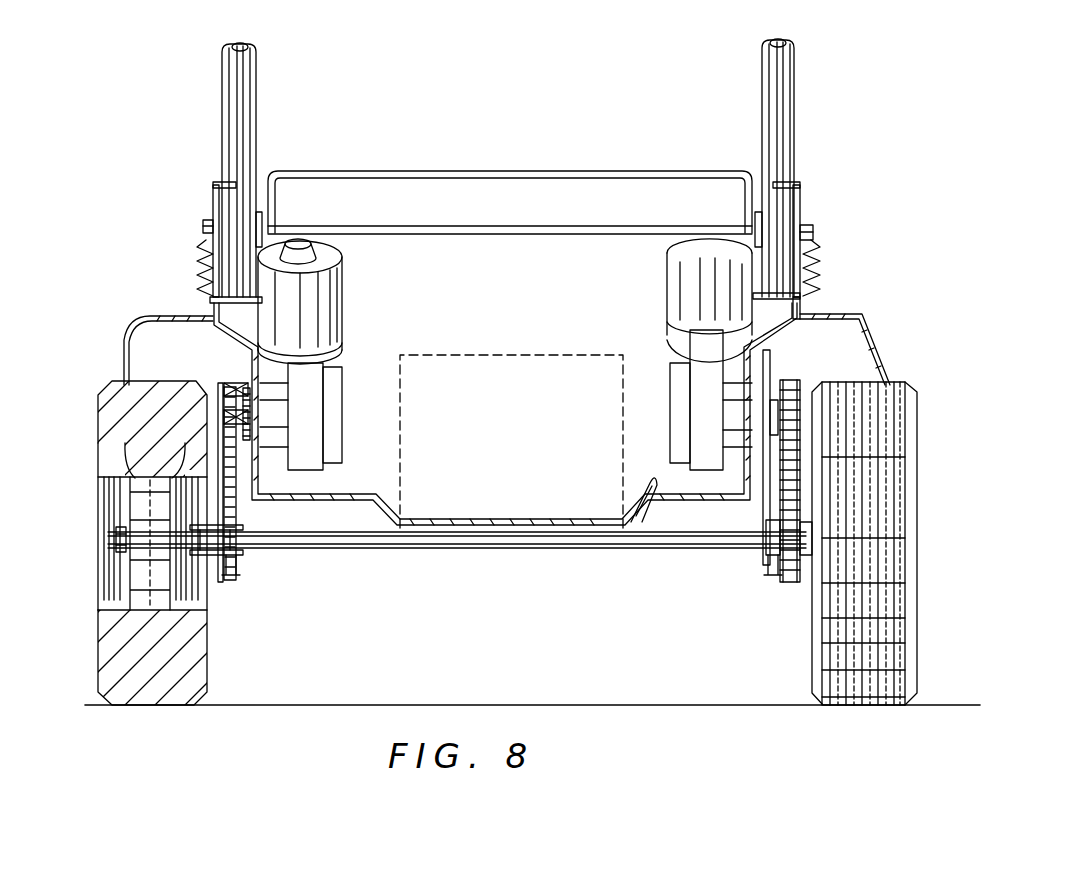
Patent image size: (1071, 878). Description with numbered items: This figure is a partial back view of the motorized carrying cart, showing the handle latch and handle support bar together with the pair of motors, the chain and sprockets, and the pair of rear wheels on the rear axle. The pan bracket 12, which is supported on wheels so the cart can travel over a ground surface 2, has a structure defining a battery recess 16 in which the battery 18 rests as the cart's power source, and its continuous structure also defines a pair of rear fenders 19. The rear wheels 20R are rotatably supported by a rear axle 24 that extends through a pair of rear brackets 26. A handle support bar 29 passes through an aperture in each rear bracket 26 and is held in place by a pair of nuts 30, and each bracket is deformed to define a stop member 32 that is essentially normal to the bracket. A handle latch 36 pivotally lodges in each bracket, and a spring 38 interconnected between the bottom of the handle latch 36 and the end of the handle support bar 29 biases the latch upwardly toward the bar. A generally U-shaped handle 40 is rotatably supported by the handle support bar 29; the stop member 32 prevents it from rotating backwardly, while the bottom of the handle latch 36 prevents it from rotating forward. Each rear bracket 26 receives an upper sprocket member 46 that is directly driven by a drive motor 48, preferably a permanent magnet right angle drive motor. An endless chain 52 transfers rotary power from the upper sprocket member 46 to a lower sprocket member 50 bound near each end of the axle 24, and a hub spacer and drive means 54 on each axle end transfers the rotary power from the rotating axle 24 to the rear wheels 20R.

The ground surface 2 is at (617, 728).
The pan bracket 12 is at (742, 503).
The battery recess 16 is at (653, 486).
The battery 18 is at (513, 490).
The rear fender 19 is at (122, 335).
The rear wheel 20R is at (177, 688).
The rear axle 24 is at (364, 548).
The rear bracket 26 is at (235, 359).
The handle support bar 29 is at (432, 235).
The nut 30 is at (195, 232).
The stop member 32 is at (216, 185).
The handle latch 36 is at (410, 173).
The spring 38 is at (200, 253).
The generally U-shaped handle 40 is at (260, 50).
The upper sprocket member 46 is at (225, 405).
The drive motor 48 is at (355, 312).
The lower sprocket member 50 is at (217, 570).
The endless chain 52 is at (230, 465).
The hub spacer and drive means 54 is at (118, 552).